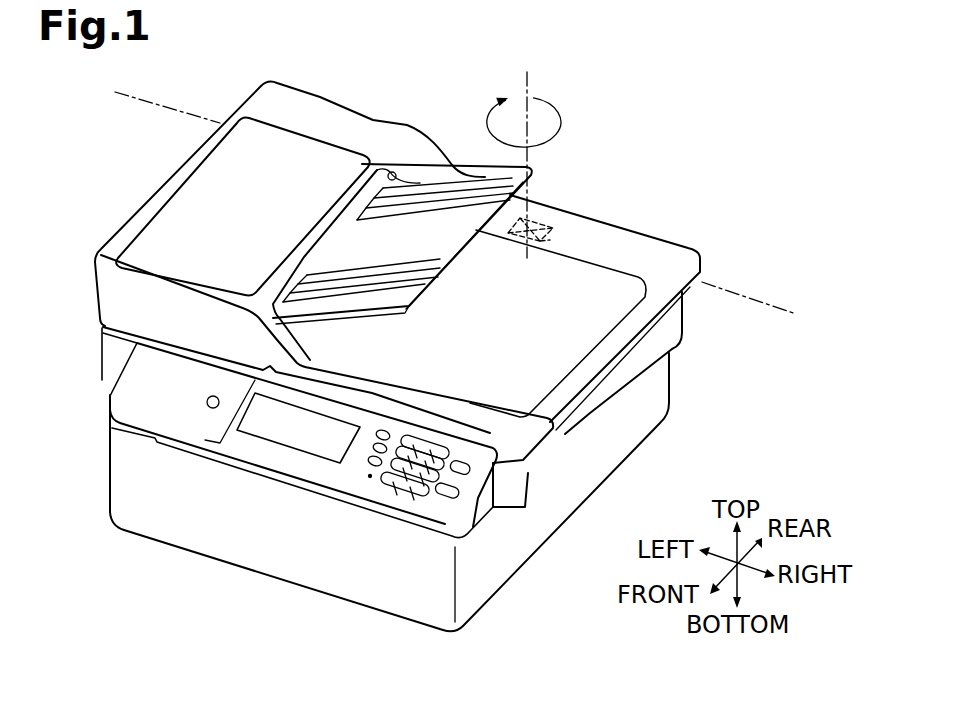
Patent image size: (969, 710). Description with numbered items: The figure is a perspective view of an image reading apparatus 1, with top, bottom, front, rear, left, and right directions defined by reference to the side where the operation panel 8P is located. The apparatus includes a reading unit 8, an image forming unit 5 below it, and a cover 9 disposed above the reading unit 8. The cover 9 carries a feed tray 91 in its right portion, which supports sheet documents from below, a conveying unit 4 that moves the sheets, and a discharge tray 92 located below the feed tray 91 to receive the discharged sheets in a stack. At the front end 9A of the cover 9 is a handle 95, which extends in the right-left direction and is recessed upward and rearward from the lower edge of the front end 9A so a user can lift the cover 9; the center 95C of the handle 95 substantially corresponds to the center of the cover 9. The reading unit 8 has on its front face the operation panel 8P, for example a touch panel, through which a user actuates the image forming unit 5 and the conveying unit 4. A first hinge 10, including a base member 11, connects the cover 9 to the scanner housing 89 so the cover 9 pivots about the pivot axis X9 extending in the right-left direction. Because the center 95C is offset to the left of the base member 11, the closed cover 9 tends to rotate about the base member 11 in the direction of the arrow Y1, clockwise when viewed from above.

The image reading apparatus 1 is at (689, 143).
The conveying unit 4 is at (252, 212).
The image forming unit 5 is at (110, 496).
The reading unit 8 is at (108, 407).
The operation panel 8P is at (283, 422).
The cover 9 is at (93, 258).
The front end 9A is at (243, 364).
The first hinge 10 is at (535, 217).
The base member 11 is at (550, 240).
The scanner housing 89 is at (637, 364).
The feed tray 91 is at (428, 247).
The discharge tray 92 is at (497, 312).
The handle 95 is at (323, 389).
The center of the handle 95C is at (313, 386).
The pivot axis X9 is at (766, 306).
The arrow Y1 is at (524, 164).